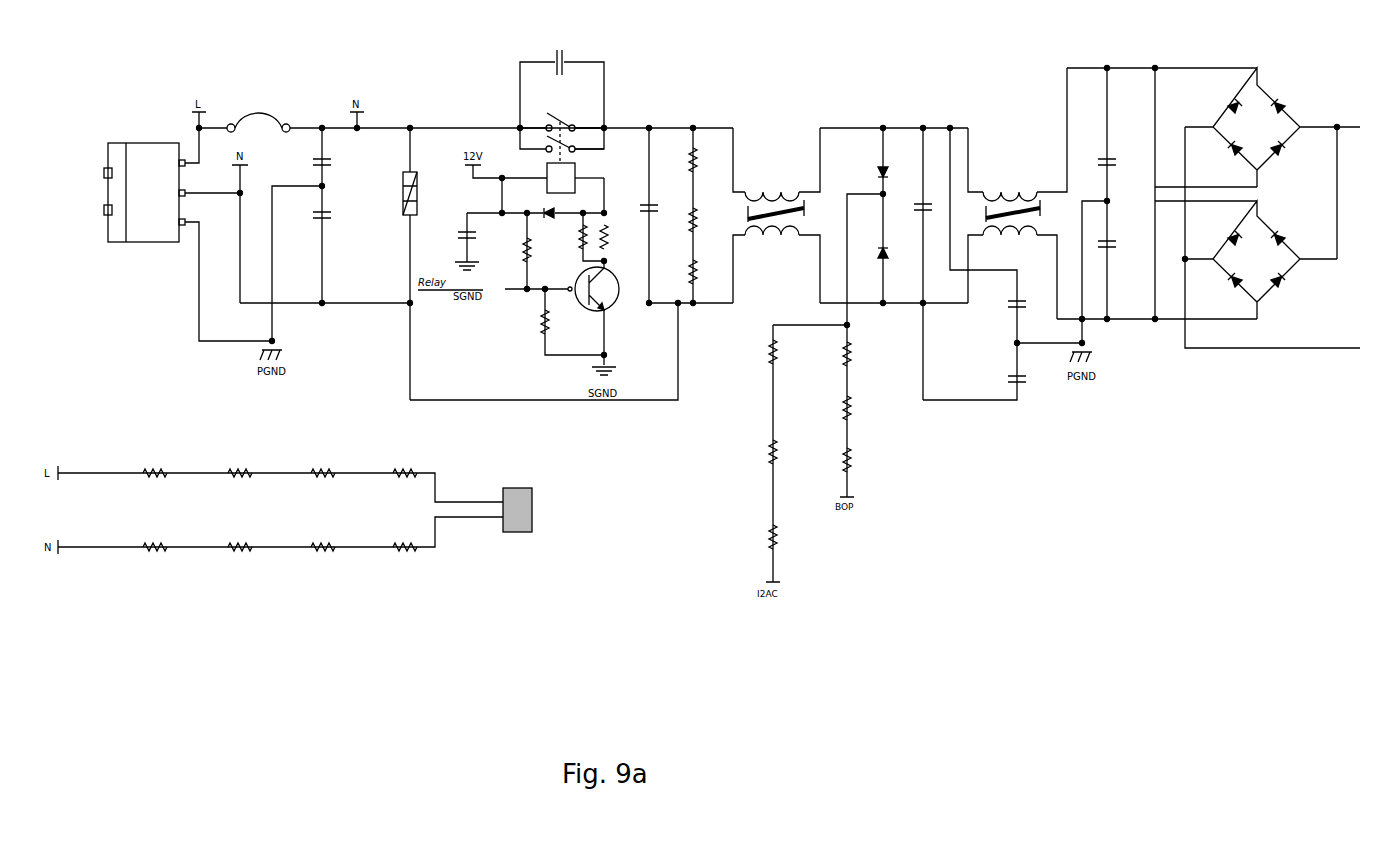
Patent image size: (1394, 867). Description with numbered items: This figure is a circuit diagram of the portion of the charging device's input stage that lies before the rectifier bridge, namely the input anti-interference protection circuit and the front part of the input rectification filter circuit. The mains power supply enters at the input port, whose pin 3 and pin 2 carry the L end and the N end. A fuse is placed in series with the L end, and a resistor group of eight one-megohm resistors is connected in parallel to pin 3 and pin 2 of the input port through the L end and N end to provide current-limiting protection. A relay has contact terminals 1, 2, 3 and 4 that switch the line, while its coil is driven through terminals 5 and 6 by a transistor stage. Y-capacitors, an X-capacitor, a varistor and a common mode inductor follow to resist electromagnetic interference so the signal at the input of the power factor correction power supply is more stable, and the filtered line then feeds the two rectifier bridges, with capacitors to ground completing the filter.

The relay K1 contact terminal 1 is at (553, 144).
The pin 2 of the port CON1 2 is at (553, 122).
The pin 3 of the port CON1 3 is at (586, 122).
The relay K1 contact terminal 4 is at (586, 144).
The relay K1 coil terminal 5 is at (524, 171).
The relay K1 coil terminal 6 is at (589, 171).